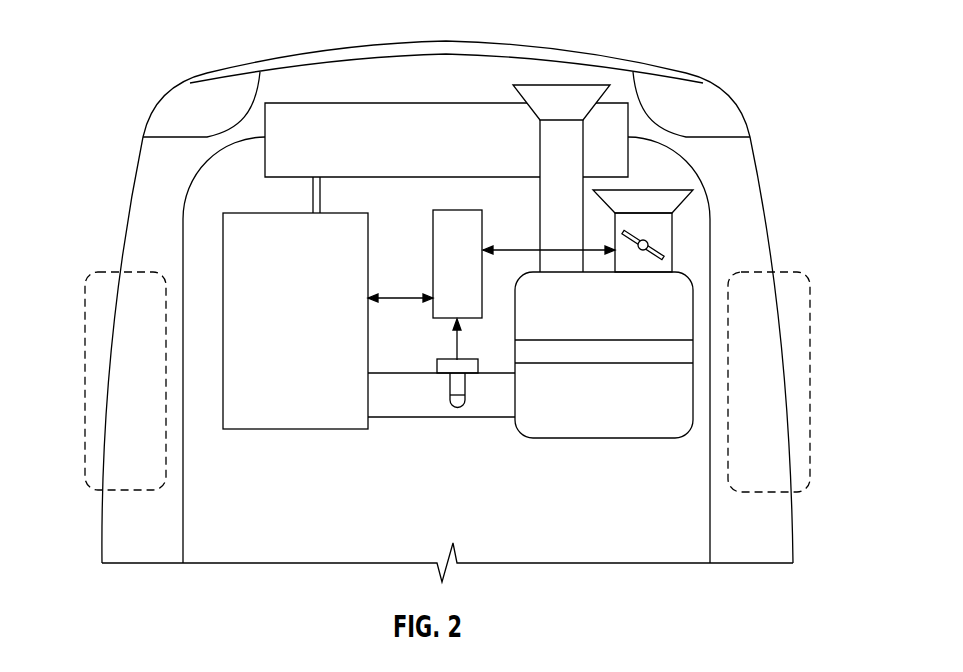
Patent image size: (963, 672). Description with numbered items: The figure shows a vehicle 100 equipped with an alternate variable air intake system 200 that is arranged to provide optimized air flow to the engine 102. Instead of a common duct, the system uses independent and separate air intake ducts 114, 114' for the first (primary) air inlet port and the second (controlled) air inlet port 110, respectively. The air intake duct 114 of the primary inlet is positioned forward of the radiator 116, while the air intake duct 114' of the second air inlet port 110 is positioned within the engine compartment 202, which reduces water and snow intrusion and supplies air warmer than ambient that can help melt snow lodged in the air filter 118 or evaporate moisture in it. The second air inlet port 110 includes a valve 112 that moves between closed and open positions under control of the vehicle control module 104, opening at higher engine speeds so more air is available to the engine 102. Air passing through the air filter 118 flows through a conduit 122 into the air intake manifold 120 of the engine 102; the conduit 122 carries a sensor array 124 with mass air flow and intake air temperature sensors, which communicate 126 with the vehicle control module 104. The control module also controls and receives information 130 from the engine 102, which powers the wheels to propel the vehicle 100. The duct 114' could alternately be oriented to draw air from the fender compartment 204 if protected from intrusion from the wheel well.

The vehicle 100 is at (776, 45).
The engine 102 is at (292, 415).
The vehicle control module 104 is at (450, 210).
The second air inlet port 110 is at (672, 252).
The valve 112 is at (647, 253).
The air intake duct 114 is at (570, 143).
The air intake duct 114' is at (670, 179).
The radiator 116 is at (283, 178).
The air filter 118 is at (587, 353).
The air intake manifold 120 is at (370, 400).
The conduit 122 is at (423, 418).
The sensor array 124 is at (443, 360).
The sensor communication 126 is at (457, 343).
The engine control and information link 130 is at (392, 295).
The alternate variable air intake system 200 is at (535, 453).
The engine compartment 202 is at (633, 501).
The fender compartment 204 is at (760, 249).